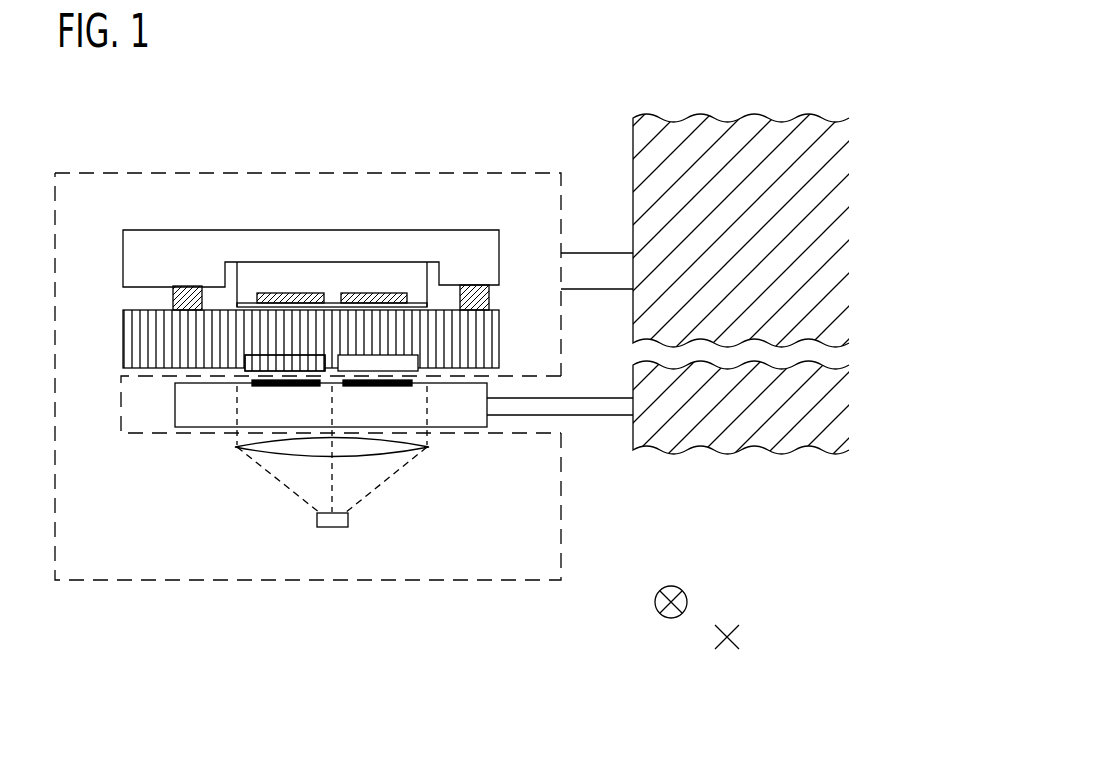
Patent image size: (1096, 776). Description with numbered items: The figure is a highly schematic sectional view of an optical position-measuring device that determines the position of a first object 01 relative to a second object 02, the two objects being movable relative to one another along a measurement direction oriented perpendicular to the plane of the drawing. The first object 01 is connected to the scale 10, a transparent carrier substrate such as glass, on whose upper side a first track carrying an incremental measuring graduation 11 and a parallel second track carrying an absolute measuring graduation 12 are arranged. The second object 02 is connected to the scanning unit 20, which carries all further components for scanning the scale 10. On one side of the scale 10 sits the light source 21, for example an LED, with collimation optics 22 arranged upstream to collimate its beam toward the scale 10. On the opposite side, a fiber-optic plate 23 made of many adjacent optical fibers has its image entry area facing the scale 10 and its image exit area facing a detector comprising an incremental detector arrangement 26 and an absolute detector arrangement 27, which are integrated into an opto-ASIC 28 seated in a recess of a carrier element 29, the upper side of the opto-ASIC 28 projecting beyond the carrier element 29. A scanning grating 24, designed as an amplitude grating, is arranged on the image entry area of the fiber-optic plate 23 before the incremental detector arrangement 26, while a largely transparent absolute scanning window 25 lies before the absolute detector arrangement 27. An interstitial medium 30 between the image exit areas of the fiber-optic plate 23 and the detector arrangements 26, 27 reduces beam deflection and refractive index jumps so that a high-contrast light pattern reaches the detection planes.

The first object 01 is at (729, 438).
The second object 02 is at (706, 133).
The scale 10 is at (188, 403).
The incremental measuring graduation 11 is at (265, 384).
The absolute measuring graduation 12 is at (407, 384).
The scanning unit 20 is at (138, 563).
The light source 21 is at (350, 521).
The collimation optics 22 is at (432, 450).
The fiber-optic plate 23 is at (485, 327).
The scanning grating 24 is at (252, 362).
The absolute scanning window 25 is at (412, 363).
The incremental detector arrangement 26 is at (284, 293).
The absolute detector arrangement 27 is at (377, 293).
The opto-ASIC 28 is at (334, 283).
The carrier element 29 is at (138, 258).
The interstitial medium 30 is at (415, 303).